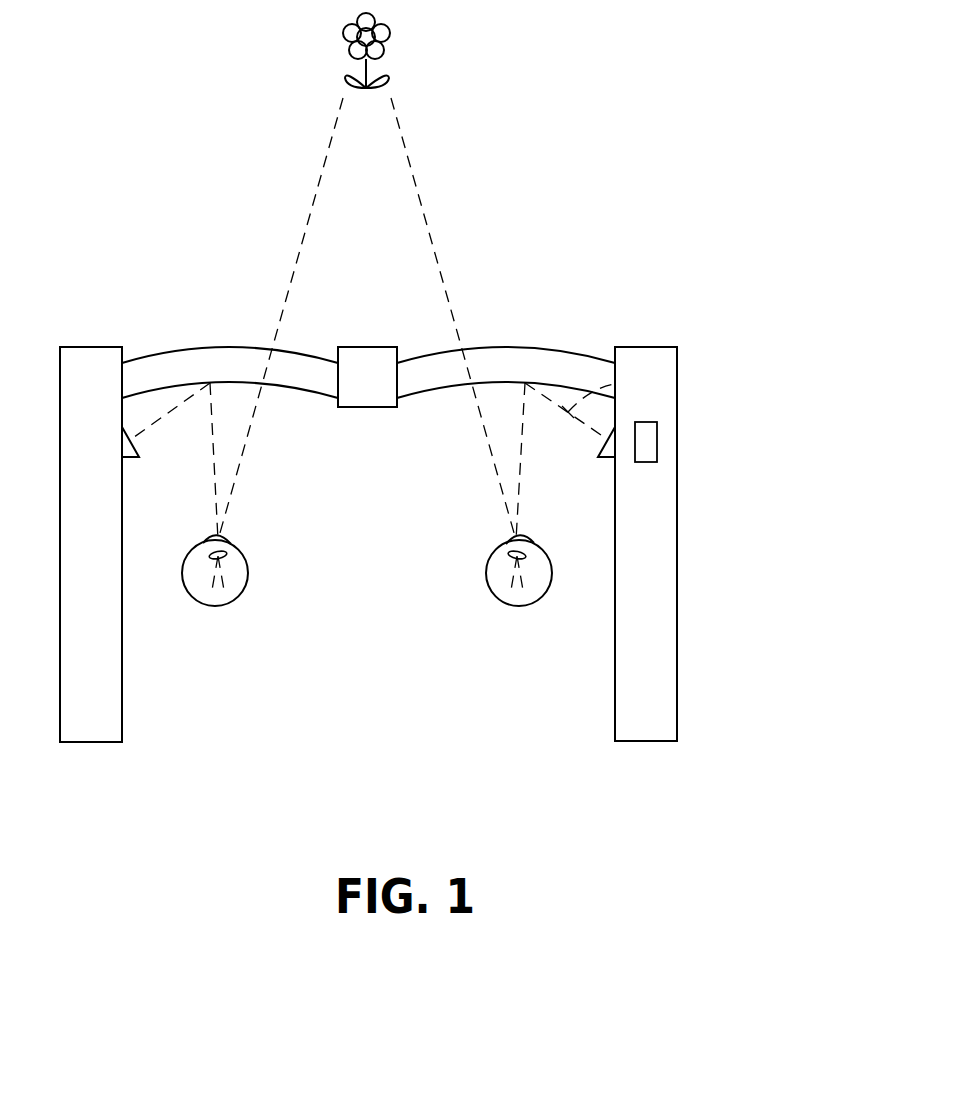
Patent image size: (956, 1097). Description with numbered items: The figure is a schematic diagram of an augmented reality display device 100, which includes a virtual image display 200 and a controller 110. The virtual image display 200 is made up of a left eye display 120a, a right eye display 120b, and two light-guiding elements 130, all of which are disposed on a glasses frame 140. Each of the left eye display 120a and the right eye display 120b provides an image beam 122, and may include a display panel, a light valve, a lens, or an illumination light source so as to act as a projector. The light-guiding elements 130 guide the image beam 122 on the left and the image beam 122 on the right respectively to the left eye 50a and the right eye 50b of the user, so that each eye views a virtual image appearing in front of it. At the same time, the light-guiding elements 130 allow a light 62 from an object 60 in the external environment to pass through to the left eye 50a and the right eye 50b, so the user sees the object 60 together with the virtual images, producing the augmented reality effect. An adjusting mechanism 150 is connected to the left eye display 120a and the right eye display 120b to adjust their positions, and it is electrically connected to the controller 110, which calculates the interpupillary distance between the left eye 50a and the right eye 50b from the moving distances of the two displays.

The augmented reality display device 100 is at (712, 692).
The controller 110 is at (657, 436).
The left eye display 120a is at (136, 458).
The right eye display 120b is at (600, 462).
The image beam 122 is at (615, 384).
The light-guiding element 130 is at (546, 360).
The glasses frame 140 is at (658, 537).
The adjusting mechanism 150 is at (368, 362).
The virtual image display 200 is at (489, 327).
The left eye 50a is at (207, 608).
The right eye 50b is at (511, 608).
The object 60 is at (388, 32).
The light 62 is at (418, 196).